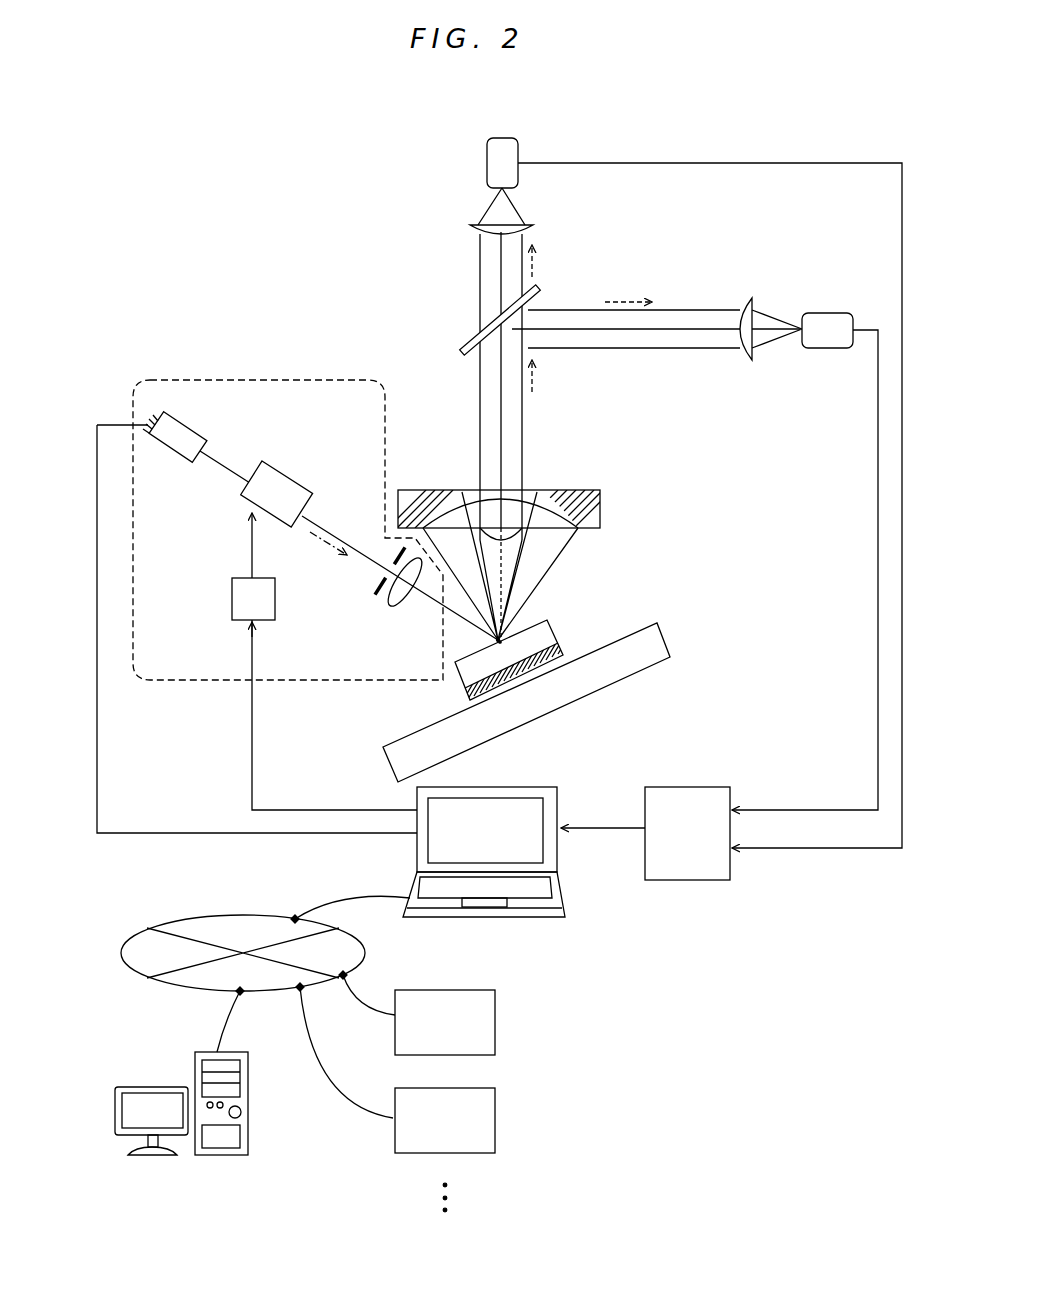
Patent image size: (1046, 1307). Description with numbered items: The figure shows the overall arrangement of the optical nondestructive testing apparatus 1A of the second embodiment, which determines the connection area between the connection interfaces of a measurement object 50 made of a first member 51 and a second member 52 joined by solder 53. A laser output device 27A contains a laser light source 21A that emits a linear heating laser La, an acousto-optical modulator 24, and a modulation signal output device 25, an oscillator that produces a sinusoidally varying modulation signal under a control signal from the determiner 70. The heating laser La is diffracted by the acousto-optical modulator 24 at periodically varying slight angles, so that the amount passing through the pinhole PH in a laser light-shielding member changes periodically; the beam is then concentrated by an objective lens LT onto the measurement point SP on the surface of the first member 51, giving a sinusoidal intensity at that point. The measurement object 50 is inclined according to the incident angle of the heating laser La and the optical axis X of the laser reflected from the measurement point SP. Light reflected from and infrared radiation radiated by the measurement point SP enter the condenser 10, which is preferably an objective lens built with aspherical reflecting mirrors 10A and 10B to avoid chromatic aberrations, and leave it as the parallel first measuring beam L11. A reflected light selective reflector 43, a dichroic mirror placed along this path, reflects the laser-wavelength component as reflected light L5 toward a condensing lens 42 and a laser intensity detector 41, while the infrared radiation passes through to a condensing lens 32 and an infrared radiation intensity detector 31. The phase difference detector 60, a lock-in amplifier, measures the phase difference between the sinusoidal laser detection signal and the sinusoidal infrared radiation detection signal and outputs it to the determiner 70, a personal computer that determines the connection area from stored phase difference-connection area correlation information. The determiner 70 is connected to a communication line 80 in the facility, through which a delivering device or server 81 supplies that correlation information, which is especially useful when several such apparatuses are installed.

The optical nondestructive testing apparatus 1A is at (265, 182).
The infrared radiation intensity detector 31 is at (481, 165).
The condensing lens 32 is at (458, 221).
The first measuring beam L11 is at (468, 290).
The reflected light selective reflector 43 is at (455, 350).
The reflected light L5 is at (668, 358).
The condensing lens 42 is at (750, 364).
The laser intensity detector 41 is at (834, 311).
The condenser 10 is at (562, 565).
The aspherical reflecting mirror 10B is at (590, 534).
The aspherical reflecting mirror 10A is at (562, 570).
The optical axis X is at (508, 578).
The laser output device 27A is at (217, 376).
The heating laser La is at (218, 468).
The laser light source 21A is at (187, 417).
The acousto-optical modulator 24 is at (290, 470).
The modulation signal output device 25 is at (227, 600).
The pinhole PH is at (377, 568).
The objective lens LT is at (388, 612).
The measurement object 50 is at (527, 691).
The second member 52 is at (382, 765).
The first member 51 is at (567, 641).
The solder 53 is at (466, 700).
The measurement point SP is at (511, 645).
The determiner 70 is at (494, 784).
The phase difference detector 60 is at (690, 785).
The communication line 80 is at (182, 915).
The delivering device 81 is at (255, 1101).